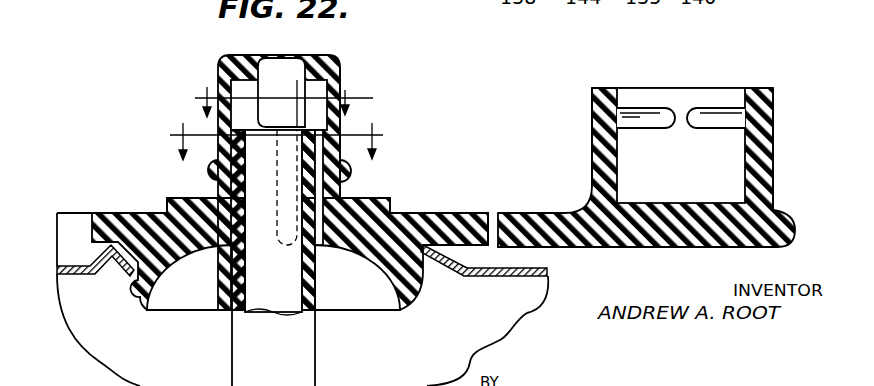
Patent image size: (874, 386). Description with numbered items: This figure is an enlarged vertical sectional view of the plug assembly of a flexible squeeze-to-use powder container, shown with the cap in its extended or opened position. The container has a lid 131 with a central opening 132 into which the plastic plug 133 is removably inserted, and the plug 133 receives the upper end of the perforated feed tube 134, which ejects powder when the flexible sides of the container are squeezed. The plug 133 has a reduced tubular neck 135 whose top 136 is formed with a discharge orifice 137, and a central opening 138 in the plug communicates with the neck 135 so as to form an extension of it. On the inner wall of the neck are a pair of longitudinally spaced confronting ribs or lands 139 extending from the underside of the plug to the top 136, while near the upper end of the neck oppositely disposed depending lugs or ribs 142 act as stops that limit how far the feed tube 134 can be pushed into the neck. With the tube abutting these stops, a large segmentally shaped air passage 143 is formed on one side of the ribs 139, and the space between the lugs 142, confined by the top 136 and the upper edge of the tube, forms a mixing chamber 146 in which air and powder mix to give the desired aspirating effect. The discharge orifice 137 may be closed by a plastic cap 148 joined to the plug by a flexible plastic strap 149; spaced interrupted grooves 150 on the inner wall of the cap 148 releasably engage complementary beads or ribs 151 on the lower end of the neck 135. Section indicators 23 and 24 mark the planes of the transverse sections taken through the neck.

The lid 131 is at (537, 273).
The central opening 132 is at (133, 258).
The plastic plug 133 is at (447, 216).
The feed tube 134 is at (316, 347).
The tubular neck 135 is at (334, 92).
The top 136 is at (230, 57).
The discharge orifice 137 is at (293, 62).
The central opening 138 is at (321, 252).
The ribs or lands 139 is at (277, 213).
The depending lugs or ribs 142 is at (282, 92).
The air passage 143 is at (320, 150).
The mixing chamber 146 is at (258, 62).
The plastic cap 148 is at (766, 171).
The flexible plastic strap 149 is at (516, 216).
The interrupted grooves 150 is at (728, 118).
The beads or ribs 151 is at (344, 172).
The section line 23- 23 is at (278, 103).
The section line 24- 24 is at (277, 142).